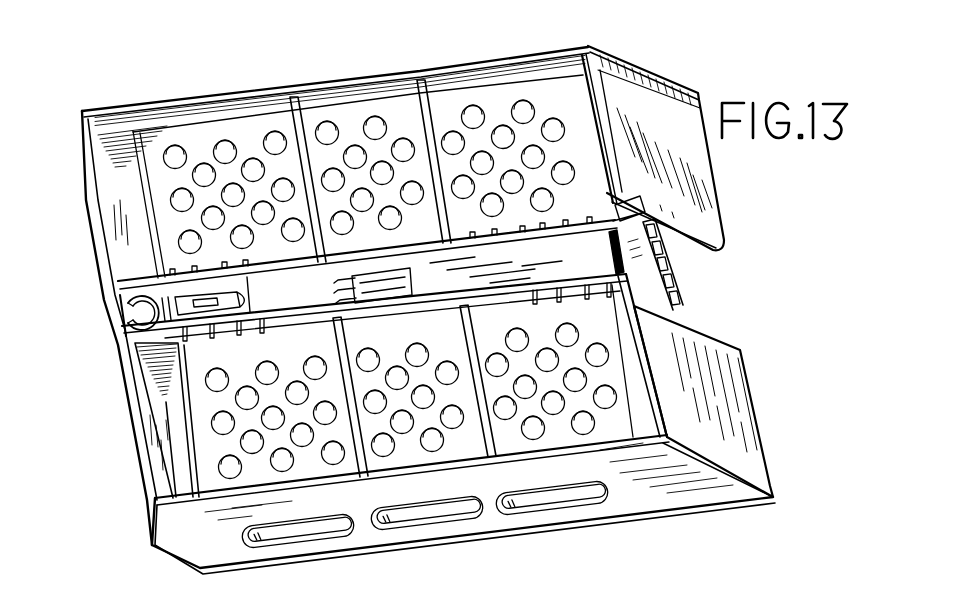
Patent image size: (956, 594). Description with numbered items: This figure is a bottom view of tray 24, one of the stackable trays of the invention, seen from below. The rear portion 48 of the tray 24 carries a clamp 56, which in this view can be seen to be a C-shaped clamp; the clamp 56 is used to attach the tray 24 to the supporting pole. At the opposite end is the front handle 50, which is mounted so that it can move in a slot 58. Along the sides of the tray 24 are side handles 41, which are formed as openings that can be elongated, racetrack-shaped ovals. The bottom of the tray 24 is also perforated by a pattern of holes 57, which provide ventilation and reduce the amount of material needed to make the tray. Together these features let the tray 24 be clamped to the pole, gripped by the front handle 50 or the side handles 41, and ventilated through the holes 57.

The tray 24 is at (662, 80).
The side handles 41 is at (572, 494).
The rear portion 48 is at (92, 214).
The front handle 50 is at (672, 300).
The clamp 56 is at (127, 320).
The holes 57 is at (222, 462).
The slot 58 is at (633, 218).